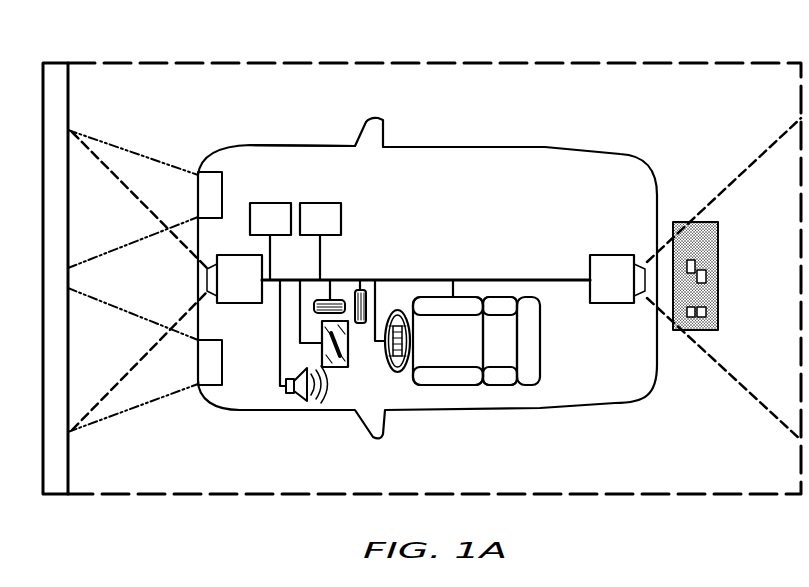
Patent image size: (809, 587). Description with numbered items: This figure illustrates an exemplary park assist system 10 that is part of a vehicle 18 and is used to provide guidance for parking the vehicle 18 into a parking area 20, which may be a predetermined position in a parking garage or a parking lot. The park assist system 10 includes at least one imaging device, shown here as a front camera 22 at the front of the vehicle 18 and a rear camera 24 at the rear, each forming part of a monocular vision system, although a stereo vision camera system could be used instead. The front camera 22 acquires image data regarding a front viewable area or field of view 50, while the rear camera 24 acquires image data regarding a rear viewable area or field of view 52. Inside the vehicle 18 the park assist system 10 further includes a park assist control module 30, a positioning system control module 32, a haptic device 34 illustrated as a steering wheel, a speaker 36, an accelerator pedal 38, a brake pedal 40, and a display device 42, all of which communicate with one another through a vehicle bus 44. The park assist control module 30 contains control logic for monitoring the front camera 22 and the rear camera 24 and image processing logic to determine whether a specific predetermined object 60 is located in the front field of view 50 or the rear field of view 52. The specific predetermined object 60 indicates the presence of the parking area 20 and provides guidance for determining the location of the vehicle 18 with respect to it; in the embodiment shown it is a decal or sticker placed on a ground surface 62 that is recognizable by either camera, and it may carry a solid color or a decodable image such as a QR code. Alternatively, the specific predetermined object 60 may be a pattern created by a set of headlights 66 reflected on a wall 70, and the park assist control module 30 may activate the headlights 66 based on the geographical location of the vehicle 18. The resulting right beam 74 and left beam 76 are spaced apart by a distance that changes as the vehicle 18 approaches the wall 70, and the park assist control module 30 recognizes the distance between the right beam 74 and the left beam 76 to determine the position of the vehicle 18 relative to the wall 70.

The park assist system 10 is at (510, 217).
The vehicle 18 is at (472, 147).
The parking area 20 is at (555, 62).
The front camera 22 is at (251, 292).
The rear camera 24 is at (623, 292).
The park assist control module 30 is at (282, 231).
The positioning system control module 32 is at (332, 231).
The haptic device 34 is at (397, 375).
The speaker 36 is at (297, 400).
The accelerator pedal 38 is at (366, 305).
The brake pedal 40 is at (338, 300).
The display device 42 is at (334, 368).
The vehicle bus 44 is at (540, 278).
The front viewable area or field of view 50 is at (150, 205).
The rear viewable area or field of view 52 is at (727, 185).
The specific predetermined object 60 is at (720, 277).
The ground surface 62 is at (772, 315).
The headlights 66 is at (212, 198).
The wall 70 is at (68, 100).
The right beam 74 is at (132, 165).
The left beam 76 is at (153, 378).